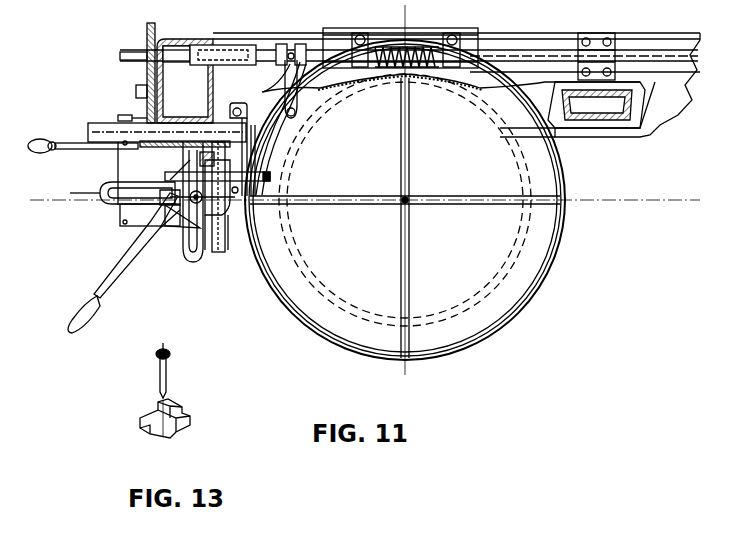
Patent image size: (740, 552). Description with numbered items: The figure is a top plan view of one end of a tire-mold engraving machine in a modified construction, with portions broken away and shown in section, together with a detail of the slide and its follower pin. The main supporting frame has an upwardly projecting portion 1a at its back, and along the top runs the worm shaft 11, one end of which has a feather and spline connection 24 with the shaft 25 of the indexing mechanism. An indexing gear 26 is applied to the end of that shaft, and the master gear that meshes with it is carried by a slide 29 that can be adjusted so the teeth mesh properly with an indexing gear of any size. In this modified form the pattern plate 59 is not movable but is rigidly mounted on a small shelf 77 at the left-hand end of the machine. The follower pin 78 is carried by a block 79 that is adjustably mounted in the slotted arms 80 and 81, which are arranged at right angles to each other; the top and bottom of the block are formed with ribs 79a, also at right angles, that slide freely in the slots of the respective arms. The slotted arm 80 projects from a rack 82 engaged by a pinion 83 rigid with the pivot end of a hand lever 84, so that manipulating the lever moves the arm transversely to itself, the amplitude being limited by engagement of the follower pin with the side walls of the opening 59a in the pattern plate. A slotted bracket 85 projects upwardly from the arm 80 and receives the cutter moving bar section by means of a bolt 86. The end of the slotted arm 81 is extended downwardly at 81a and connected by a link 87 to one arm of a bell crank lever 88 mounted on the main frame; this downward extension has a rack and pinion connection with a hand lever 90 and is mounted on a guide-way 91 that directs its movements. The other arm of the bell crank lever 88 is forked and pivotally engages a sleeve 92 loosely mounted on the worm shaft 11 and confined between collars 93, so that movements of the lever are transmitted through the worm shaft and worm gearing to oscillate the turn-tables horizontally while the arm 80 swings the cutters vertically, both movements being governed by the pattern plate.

In FIG. 11, the upwardly projecting portion 1a is at (188, 42).
In FIG. 11, the worm shaft 11 is at (505, 56).
In FIG. 11, the feather and spline connection 24 is at (222, 52).
In FIG. 11, the shaft of the indexing mechanism 25 is at (175, 52).
In FIG. 11, the indexing gear 26 is at (147, 30).
In FIG. 11, the slide 29 is at (147, 98).
In FIG. 11, the pattern plate 59 is at (122, 214).
In FIG. 11, the opening in the pattern plate 59a is at (165, 225).
In FIG. 11, the small shelf 77 is at (116, 150).
In FIG. 11, the follower pin 78 is at (192, 203).
In FIG. 13, the follower pin 78 is at (167, 371).
In FIG. 11, the block 79 is at (195, 205).
In FIG. 13, the block 79 is at (188, 418).
In FIG. 13, the ribs 79a is at (178, 408).
In FIG. 11, the slotted arm 80 is at (200, 255).
In FIG. 11, the slotted arm 81 is at (106, 196).
In FIG. 11, the downwardly extended arm 81a is at (222, 225).
In FIG. 11, the rack 82 is at (135, 135).
In FIG. 11, the pinion 83 is at (170, 146).
In FIG. 11, the hand lever 84 is at (62, 143).
In FIG. 11, the slotted bracket 85 is at (250, 172).
In FIG. 11, the bolt 86 is at (247, 156).
In FIG. 11, the link 87 is at (245, 140).
In FIG. 11, the bell crank lever 88 is at (268, 92).
In FIG. 11, the hand lever 90 is at (112, 290).
In FIG. 11, the guide-way 91 is at (218, 252).
In FIG. 11, the sleeve 92 is at (292, 50).
In FIG. 11, the collars 93 is at (280, 44).